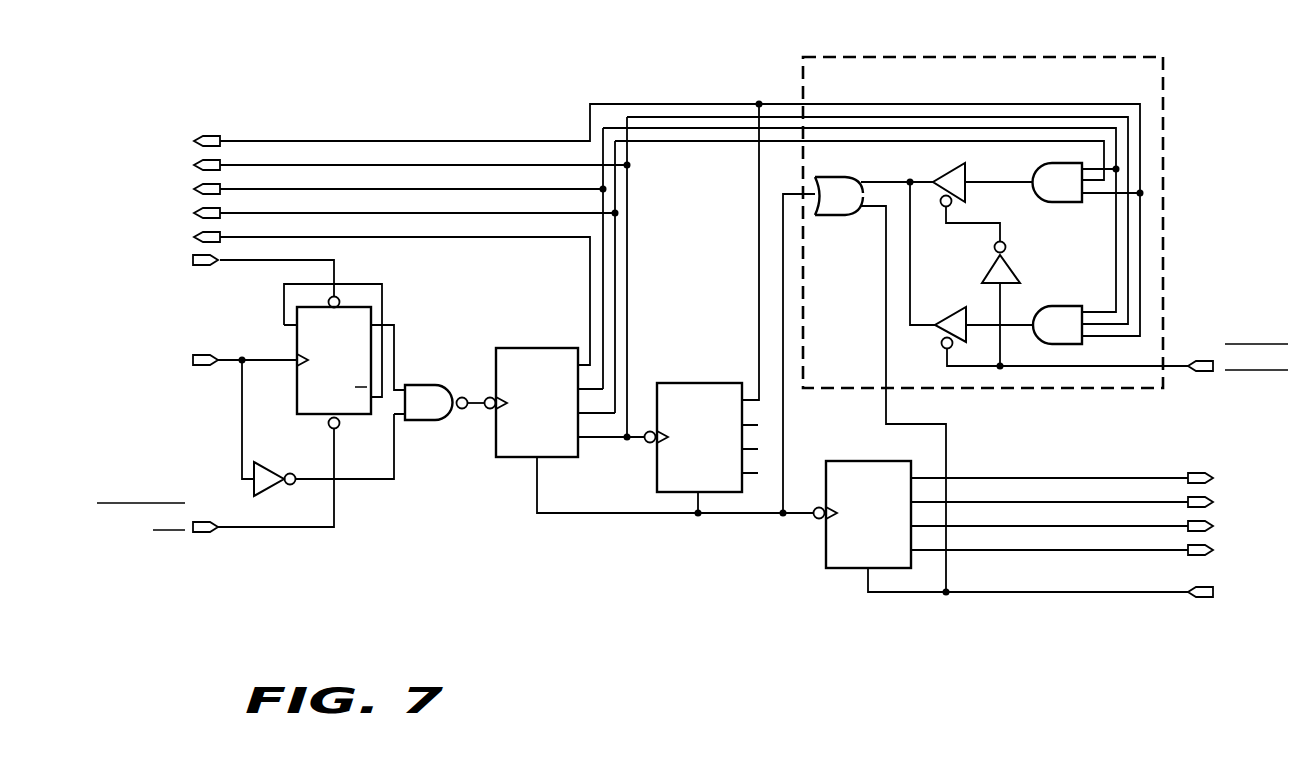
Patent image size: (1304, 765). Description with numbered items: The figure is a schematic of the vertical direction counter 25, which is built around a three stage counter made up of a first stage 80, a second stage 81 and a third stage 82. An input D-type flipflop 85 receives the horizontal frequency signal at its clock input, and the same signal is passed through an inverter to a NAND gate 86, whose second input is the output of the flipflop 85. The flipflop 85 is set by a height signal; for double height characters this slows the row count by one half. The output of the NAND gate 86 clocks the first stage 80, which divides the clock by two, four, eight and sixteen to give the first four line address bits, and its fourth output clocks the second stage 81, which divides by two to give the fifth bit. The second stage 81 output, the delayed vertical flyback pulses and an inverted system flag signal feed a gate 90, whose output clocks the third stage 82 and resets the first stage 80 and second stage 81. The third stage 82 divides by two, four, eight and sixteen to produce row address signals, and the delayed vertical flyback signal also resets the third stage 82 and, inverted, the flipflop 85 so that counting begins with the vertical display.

The vertical direction counter 25 is at (540, 628).
The first stage 80 is at (537, 347).
The second stage 81 is at (699, 382).
The third stage 82 is at (825, 556).
The input D-type flipflop 85 is at (308, 417).
The NAND gate 86 is at (430, 383).
The gate 90 is at (1163, 75).